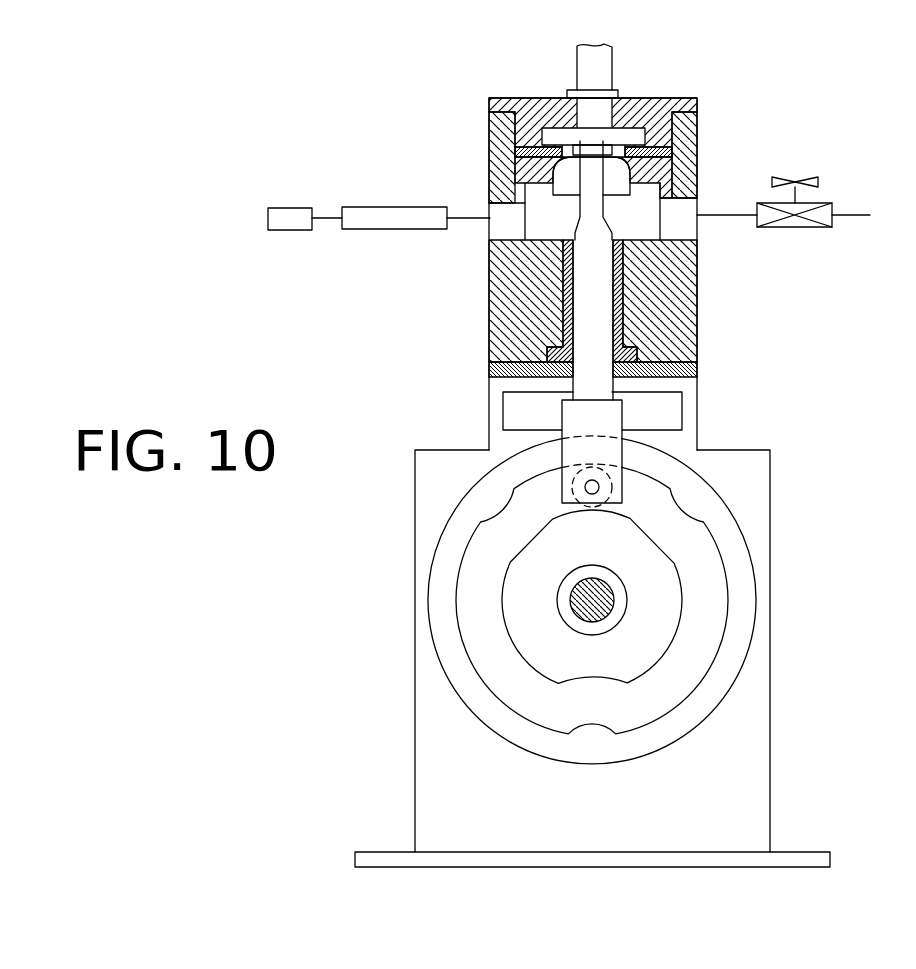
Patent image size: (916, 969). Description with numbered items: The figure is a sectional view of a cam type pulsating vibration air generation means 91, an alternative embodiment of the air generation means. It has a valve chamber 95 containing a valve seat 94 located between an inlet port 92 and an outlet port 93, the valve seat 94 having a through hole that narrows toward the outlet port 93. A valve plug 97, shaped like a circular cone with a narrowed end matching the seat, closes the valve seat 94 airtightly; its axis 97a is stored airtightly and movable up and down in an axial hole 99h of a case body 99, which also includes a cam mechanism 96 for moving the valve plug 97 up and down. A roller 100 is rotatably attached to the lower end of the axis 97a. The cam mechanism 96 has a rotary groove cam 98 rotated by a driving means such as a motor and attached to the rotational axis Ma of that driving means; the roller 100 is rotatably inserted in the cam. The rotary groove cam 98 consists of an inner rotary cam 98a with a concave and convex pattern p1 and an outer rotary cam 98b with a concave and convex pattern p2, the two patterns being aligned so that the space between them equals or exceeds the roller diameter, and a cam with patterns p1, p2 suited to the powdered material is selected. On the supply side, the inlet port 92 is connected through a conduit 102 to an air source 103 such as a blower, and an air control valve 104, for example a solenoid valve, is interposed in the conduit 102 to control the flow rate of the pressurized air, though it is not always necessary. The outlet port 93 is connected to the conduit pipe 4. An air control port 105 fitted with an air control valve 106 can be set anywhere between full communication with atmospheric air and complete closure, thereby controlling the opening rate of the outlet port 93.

The conduit pipe 4 is at (600, 71).
The outlet port 93 is at (595, 103).
The valve seat 94 is at (522, 203).
The valve chamber 95 is at (540, 213).
The valve plug 97 is at (615, 178).
The air control port 105 is at (697, 207).
The pulsating vibration air generation means 91 is at (800, 133).
The air source 103 is at (292, 208).
The air control valve 104 is at (397, 215).
The conduit 102 is at (327, 222).
The inlet port 92 is at (490, 230).
The air control valve 106 is at (798, 227).
The axial hole 99h is at (623, 266).
The case body 99 is at (668, 293).
The axis 97a is at (600, 330).
The cam mechanism 96 is at (764, 382).
The roller 100 is at (672, 477).
The outer rotary cam 98b is at (707, 513).
The inner rotary cam 98a is at (665, 613).
The rotary groove cam 98 is at (840, 517).
The rotational axis Ma is at (560, 590).
The concave and convex pattern p1 is at (663, 658).
The concave and convex pattern p2 is at (617, 735).